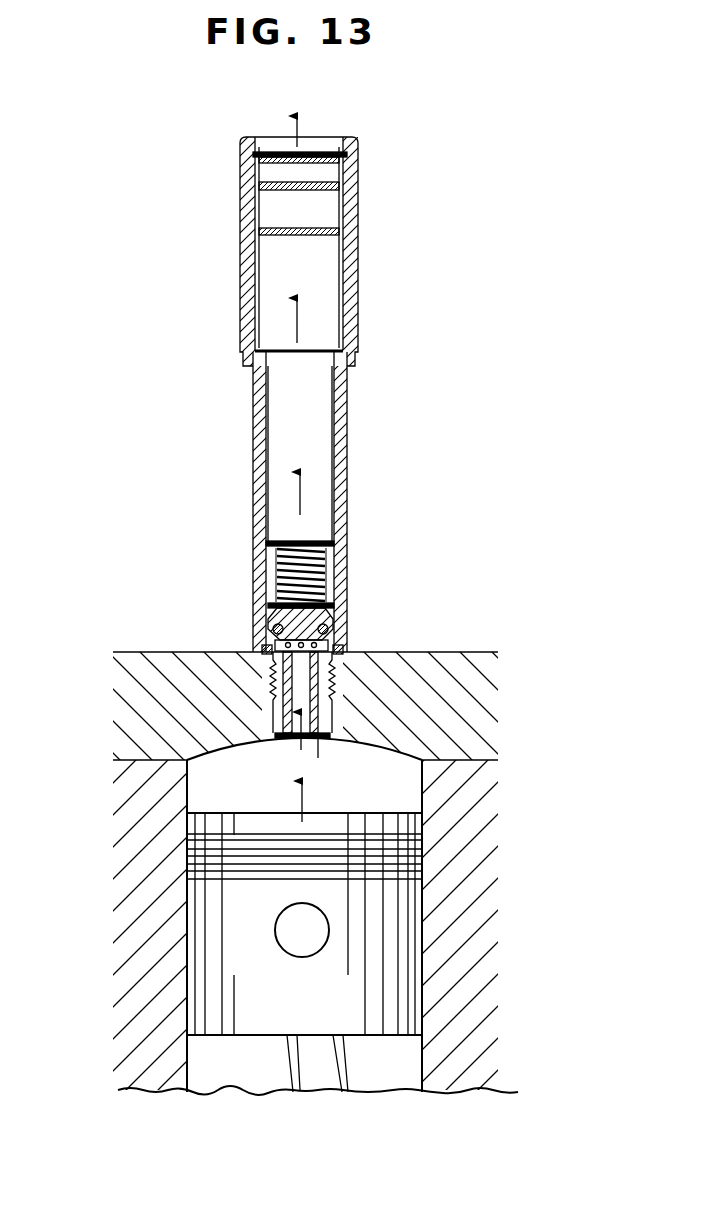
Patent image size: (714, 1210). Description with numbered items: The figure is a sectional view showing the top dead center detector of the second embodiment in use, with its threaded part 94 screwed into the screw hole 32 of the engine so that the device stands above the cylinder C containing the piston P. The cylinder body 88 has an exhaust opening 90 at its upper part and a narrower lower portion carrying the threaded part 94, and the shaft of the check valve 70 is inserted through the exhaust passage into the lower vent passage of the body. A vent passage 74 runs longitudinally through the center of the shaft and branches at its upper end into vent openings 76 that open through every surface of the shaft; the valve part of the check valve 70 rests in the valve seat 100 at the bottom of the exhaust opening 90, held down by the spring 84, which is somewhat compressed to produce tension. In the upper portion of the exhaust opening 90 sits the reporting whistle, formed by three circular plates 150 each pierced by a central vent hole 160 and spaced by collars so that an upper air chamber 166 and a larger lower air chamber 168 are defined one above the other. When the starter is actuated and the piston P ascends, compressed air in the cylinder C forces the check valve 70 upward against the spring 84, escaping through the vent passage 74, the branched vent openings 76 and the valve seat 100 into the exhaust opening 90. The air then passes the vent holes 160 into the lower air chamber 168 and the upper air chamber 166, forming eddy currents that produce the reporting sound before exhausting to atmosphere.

The circular plate 150 is at (345, 154).
The upper air chamber 166 is at (290, 168).
The vent hole 160 is at (300, 152).
The lower air chamber 168 is at (298, 207).
The cylinder body 88 is at (348, 432).
The exhaust opening 90 is at (307, 404).
The check valve 70 is at (348, 605).
The spring 84 is at (338, 568).
The valve seat 100 is at (272, 630).
The threaded part 94 is at (333, 671).
The screw hole 32 is at (332, 708).
The vent openings 76 is at (300, 686).
The vent passage 74 is at (307, 684).
The cylinder C is at (372, 792).
The piston P is at (373, 980).